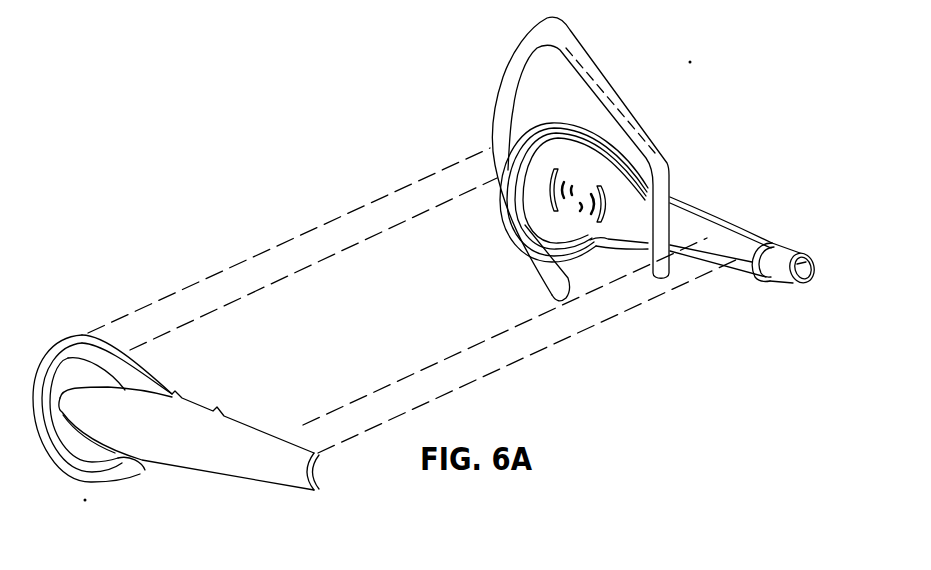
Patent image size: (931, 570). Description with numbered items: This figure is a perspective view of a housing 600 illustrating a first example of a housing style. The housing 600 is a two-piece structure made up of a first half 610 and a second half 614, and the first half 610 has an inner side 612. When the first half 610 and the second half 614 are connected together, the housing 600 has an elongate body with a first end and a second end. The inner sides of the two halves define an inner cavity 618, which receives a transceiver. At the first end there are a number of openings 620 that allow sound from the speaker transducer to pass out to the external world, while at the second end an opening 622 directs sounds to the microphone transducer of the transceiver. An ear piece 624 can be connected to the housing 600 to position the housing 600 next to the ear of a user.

The housing 600 is at (236, 189).
The first half 610 is at (688, 198).
The inner side 612 is at (737, 240).
The second half 614 is at (183, 467).
The inner cavity 618 is at (552, 224).
The openings 620 is at (591, 176).
The opening 622 is at (808, 283).
The ear piece 624 is at (500, 93).